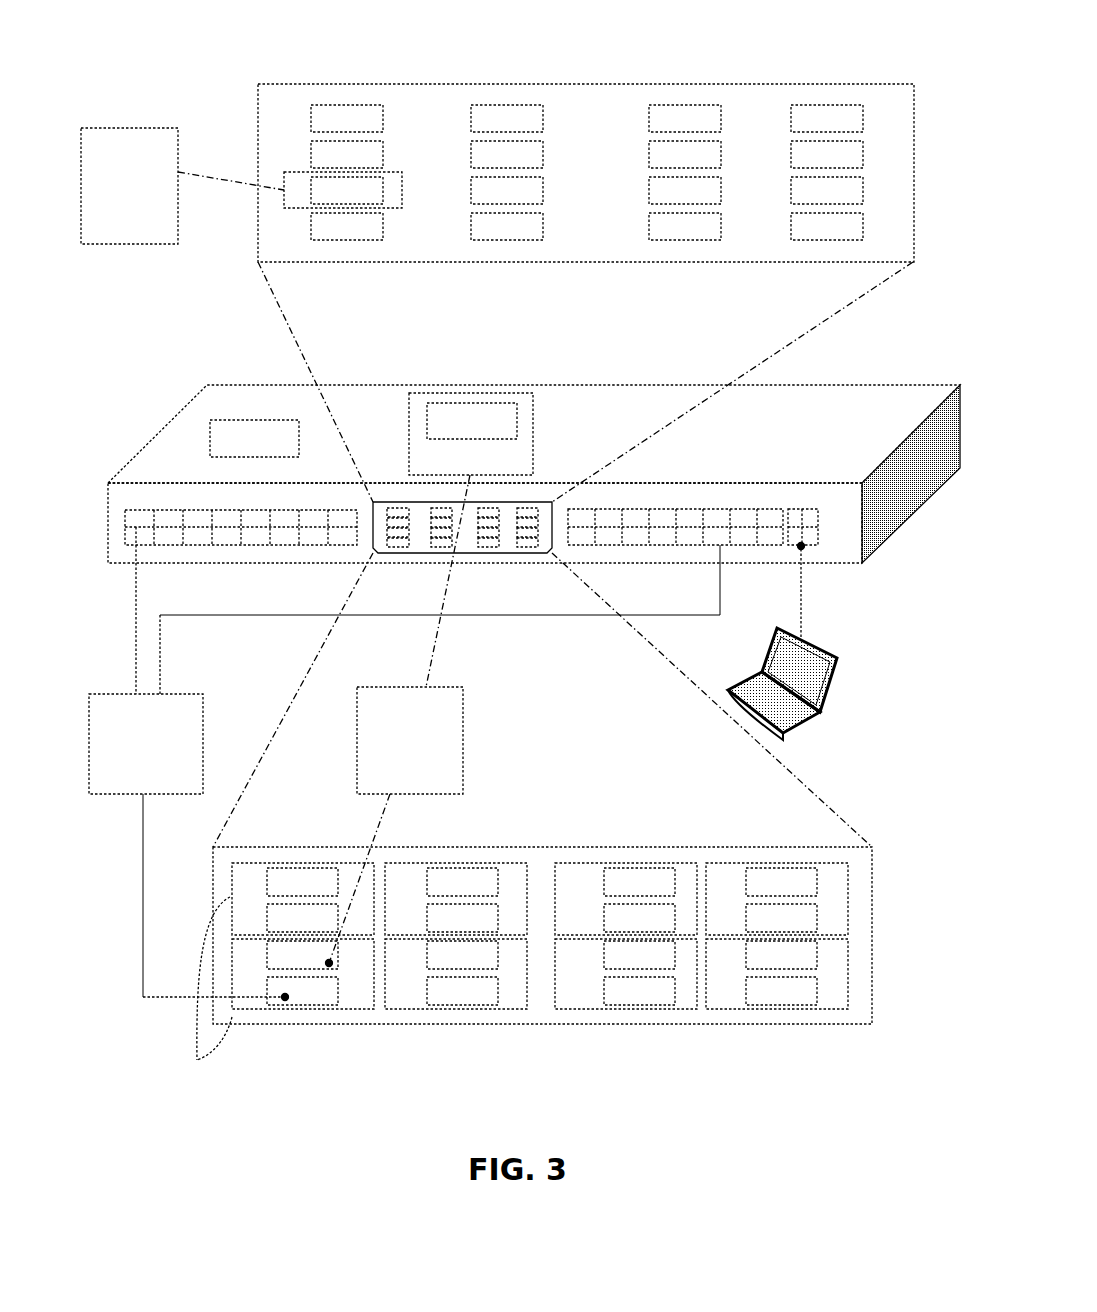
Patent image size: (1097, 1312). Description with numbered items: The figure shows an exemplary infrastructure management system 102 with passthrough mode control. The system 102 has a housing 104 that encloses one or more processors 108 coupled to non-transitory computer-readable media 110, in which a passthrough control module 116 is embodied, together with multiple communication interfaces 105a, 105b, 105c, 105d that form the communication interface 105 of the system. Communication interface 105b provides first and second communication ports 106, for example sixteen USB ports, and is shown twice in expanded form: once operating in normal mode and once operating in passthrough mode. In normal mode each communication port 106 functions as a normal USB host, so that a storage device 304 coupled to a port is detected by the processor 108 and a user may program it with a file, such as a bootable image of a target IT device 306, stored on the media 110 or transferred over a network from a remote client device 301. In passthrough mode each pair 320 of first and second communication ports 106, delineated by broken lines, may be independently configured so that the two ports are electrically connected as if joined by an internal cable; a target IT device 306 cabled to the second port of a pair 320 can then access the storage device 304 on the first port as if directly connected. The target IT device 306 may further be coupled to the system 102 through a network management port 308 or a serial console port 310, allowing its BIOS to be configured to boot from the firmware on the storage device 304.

The infrastructure management (IM) system 102 is at (590, 395).
The housing 104 is at (683, 492).
The communication interface 105 is at (542, 940).
The communication interface 105a is at (225, 548).
The communication interface 105b is at (430, 553).
The communication interface 105c is at (692, 548).
The communication interface 105d is at (818, 533).
The communication port 106 is at (357, 196).
The processor 108 is at (254, 438).
The non-transitory computer-readable media 110 is at (471, 434).
The passthrough control module 116 is at (472, 421).
The remote client device 301 is at (838, 675).
The IT device (storage device) 304 is at (275, 547).
The target IT device 306 is at (404, 764).
The network management port 308 is at (143, 535).
The serial console port 310 is at (728, 548).
The pair of communication ports 320 is at (200, 997).